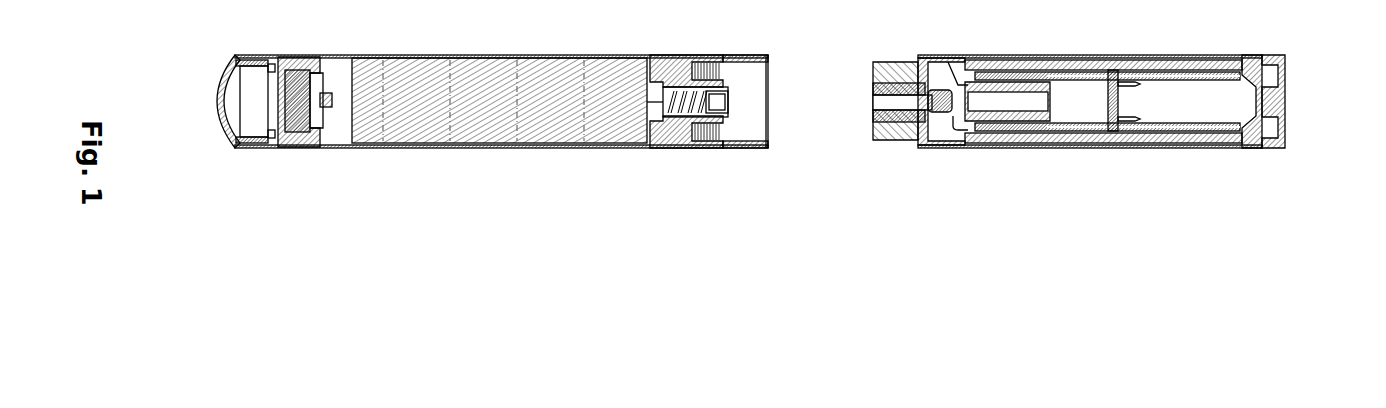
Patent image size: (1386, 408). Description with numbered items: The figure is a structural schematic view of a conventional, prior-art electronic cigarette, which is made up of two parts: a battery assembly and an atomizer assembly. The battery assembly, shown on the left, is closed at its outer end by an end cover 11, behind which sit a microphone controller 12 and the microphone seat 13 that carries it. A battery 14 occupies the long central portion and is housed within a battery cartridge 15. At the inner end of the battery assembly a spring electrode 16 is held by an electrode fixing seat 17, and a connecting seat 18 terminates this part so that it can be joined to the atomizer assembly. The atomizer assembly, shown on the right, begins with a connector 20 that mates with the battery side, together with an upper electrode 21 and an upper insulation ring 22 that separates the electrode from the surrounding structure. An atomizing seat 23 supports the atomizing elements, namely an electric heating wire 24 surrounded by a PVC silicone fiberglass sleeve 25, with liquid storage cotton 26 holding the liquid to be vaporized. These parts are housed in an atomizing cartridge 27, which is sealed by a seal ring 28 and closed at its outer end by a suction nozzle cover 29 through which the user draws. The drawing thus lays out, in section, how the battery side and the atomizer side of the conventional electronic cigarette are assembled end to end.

The end cover 11 is at (232, 148).
The microphone controller 12 is at (290, 128).
The microphone seat 13 is at (310, 147).
The battery 14 is at (410, 135).
The battery cartridge 15 is at (491, 150).
The spring electrode 16 is at (673, 112).
The electrode fixing seat 17 is at (695, 130).
The connecting seat 18 is at (767, 150).
The connector 20 is at (882, 140).
The upper electrode 21 is at (893, 140).
The upper insulation ring 22 is at (925, 150).
The atomizing seat 23 is at (975, 147).
The electric heating wire 24 is at (1110, 130).
The PVC silicone fiberglass sleeve 25 is at (1148, 128).
The liquid storage cotton 26 is at (1172, 140).
The atomizing cartridge 27 is at (1205, 148).
The seal ring 28 is at (1258, 143).
The suction nozzle cover 29 is at (1287, 148).